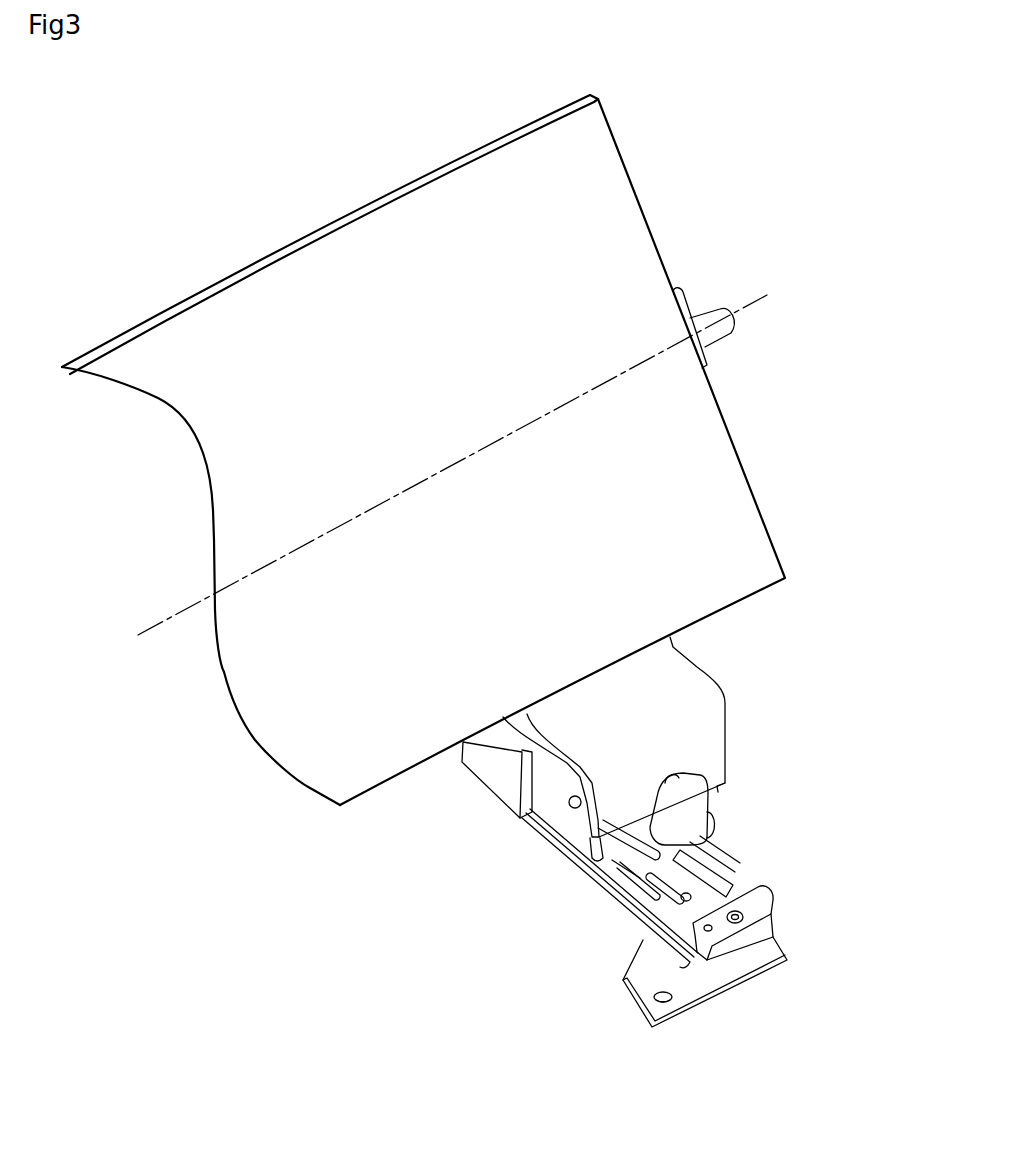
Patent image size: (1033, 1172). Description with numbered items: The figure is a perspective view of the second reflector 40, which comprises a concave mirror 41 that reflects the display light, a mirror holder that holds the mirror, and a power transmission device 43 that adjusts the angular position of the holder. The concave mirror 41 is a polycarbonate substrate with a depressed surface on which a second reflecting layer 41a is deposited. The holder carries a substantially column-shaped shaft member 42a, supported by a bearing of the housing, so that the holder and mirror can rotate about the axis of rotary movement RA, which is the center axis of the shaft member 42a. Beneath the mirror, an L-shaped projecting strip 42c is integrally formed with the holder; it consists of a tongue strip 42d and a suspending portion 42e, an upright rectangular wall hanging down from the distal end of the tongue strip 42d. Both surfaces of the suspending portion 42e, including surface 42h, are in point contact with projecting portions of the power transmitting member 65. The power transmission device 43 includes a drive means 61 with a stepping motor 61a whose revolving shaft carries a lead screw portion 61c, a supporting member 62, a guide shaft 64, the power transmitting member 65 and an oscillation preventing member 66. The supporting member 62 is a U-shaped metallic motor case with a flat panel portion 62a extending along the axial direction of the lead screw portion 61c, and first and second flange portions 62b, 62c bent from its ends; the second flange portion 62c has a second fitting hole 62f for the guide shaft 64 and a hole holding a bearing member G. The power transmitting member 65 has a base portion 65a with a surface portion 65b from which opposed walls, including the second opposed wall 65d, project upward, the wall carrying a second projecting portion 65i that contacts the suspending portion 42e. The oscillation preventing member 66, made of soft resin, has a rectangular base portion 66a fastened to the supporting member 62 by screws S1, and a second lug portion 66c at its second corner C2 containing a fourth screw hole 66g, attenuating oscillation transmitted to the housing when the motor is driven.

The second reflector 40 is at (338, 930).
The concave mirror 41 is at (220, 674).
The second reflecting layer 41a is at (279, 743).
The shaft member 42a is at (717, 317).
The projecting strip 42c is at (739, 665).
The tongue strip 42d is at (670, 652).
The suspending portion 42e is at (727, 740).
The surface of suspending portion 42h is at (713, 764).
The power transmission device 43 is at (537, 982).
The drive means 61 is at (487, 795).
The stepping motor 61a is at (488, 770).
The lead screw portion 61c is at (733, 885).
The supporting member 62 is at (773, 905).
The flat panel portion 62a is at (572, 830).
The first flange portion 62b is at (543, 777).
The second flange portion 62c is at (762, 930).
The second fitting hole 62f is at (709, 932).
The guide shaft 64 is at (670, 890).
The power transmitting member 65 is at (717, 830).
The base portion 65a is at (632, 875).
The surface portion 65b is at (613, 870).
The second opposed wall 65d is at (700, 803).
The second projecting portion 65i is at (670, 773).
The oscillation preventing member 66 is at (635, 1010).
The base portion 66a is at (775, 957).
The second lug portion 66c is at (640, 982).
The fourth screw hole 66g is at (662, 1003).
The second corner C2 is at (688, 1018).
The bearing member G is at (737, 922).
The axis of rotary movement RA is at (157, 622).
The screw S1 is at (573, 807).